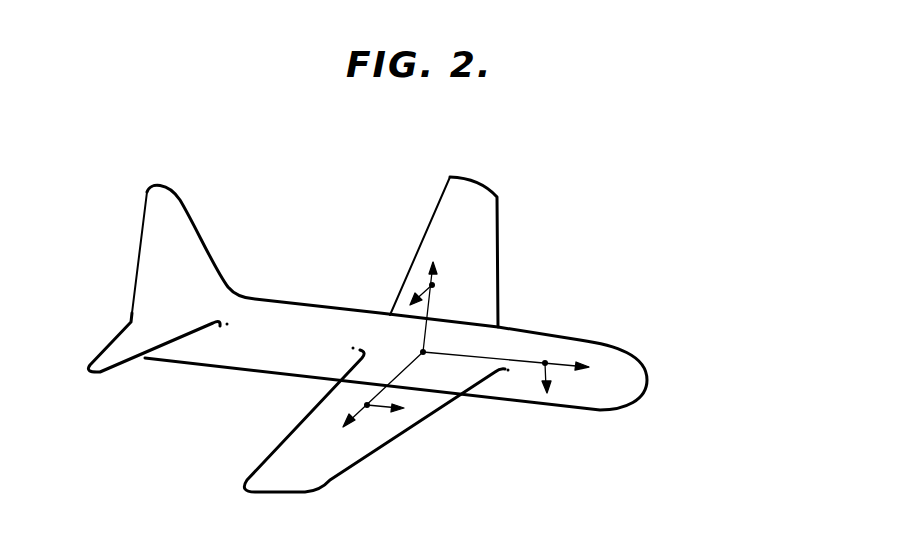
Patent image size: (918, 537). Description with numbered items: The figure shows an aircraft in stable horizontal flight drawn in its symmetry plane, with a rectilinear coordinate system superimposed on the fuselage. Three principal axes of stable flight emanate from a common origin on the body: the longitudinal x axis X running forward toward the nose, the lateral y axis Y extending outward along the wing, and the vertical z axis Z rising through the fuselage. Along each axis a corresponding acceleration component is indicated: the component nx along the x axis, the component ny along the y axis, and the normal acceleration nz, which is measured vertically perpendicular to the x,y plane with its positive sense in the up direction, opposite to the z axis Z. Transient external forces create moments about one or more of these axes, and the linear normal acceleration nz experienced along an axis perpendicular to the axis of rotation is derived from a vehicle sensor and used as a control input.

The x axis X is at (513, 367).
The y axis Y is at (373, 401).
The z axis Z is at (440, 304).
The acceleration component along x axis nx is at (384, 419).
The acceleration component along y axis ny is at (412, 311).
The normal acceleration nz is at (533, 380).